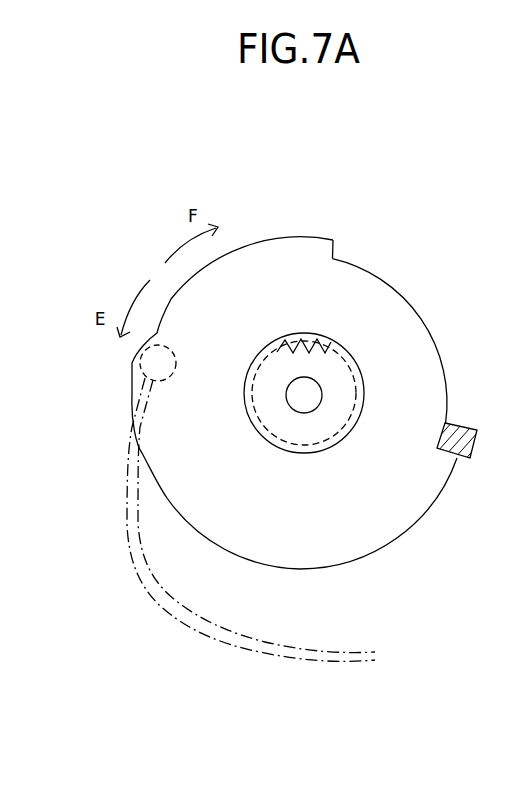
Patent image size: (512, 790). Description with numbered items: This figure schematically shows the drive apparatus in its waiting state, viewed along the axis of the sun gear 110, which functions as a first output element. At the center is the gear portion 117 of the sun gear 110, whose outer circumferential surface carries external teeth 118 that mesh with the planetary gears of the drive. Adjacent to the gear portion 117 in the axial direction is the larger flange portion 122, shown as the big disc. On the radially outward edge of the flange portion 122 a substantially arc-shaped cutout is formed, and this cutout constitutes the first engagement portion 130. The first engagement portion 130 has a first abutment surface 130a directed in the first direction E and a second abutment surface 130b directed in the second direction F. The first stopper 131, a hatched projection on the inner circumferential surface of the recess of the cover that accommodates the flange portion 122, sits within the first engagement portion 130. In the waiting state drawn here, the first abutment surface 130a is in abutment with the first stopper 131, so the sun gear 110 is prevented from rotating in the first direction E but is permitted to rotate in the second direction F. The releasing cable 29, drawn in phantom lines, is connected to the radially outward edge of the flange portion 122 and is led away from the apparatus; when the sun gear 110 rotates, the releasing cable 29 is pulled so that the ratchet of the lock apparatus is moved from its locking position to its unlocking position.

The sun gear 110 is at (173, 138).
The external teeth 118 is at (302, 338).
The second abutment surface 130b is at (337, 250).
The first engagement portion 130 is at (407, 293).
The first stopper 131 is at (465, 425).
The first abutment surface 130a is at (477, 453).
The gear portion 117 is at (328, 427).
The flange portion 122 is at (287, 528).
The releasing cable 29 is at (211, 640).